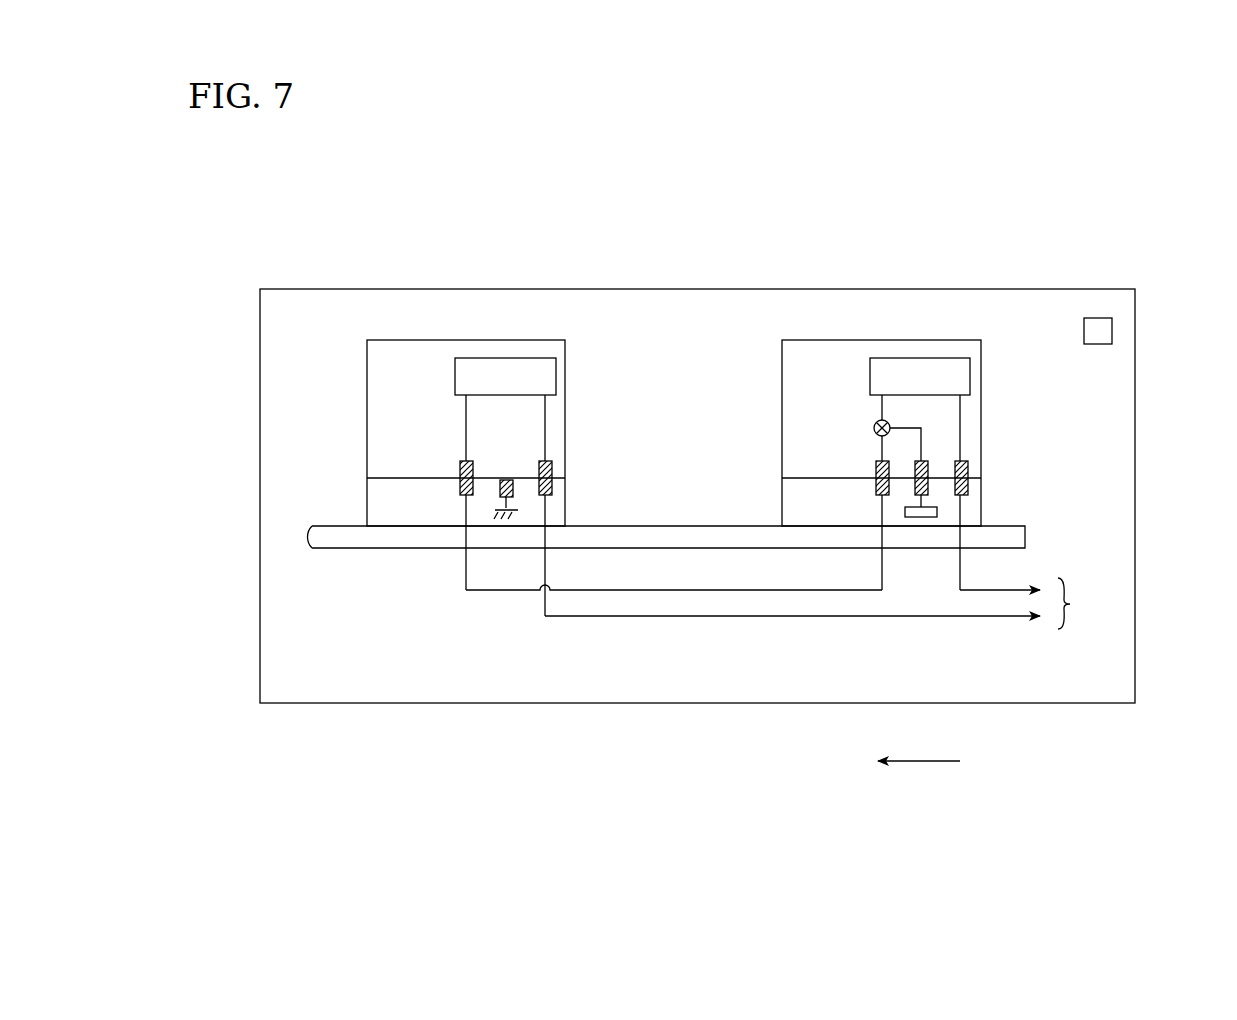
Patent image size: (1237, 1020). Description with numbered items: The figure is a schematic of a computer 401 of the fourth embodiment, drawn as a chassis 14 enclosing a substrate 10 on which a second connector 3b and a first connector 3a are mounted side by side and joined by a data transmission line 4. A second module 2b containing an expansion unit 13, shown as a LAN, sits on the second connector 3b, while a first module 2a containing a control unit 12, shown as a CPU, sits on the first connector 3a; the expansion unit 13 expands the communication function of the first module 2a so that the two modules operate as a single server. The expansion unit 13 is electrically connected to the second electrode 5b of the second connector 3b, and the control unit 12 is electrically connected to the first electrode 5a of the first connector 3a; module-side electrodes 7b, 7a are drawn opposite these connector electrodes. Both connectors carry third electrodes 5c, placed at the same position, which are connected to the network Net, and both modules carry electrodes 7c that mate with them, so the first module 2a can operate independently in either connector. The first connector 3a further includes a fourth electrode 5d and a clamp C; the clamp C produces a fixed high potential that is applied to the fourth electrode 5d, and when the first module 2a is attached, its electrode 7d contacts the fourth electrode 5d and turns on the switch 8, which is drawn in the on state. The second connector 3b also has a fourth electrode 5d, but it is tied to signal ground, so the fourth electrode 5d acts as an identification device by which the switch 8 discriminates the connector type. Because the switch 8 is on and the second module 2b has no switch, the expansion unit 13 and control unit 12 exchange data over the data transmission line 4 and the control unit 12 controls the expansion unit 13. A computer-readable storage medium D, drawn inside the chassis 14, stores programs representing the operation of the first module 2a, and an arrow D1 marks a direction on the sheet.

The computer 401 is at (760, 200).
The chassis 14 is at (1137, 307).
The second module 2b is at (393, 352).
The first module 2a is at (805, 352).
The expansion unit 13 is at (508, 357).
The control unit 12 is at (922, 357).
The connector 7b is at (460, 470).
The second electrode 5b is at (460, 486).
The fourth electrode 5d is at (512, 494).
The electrode 7c is at (553, 468).
The third electrode 5c is at (553, 489).
The substrate 10 is at (655, 526).
The second connector 3b is at (427, 515).
The first connector 3a is at (970, 514).
The data transmission line 4 is at (500, 592).
The switch 8 is at (875, 422).
The connector 7a is at (876, 470).
The first electrode 5a is at (876, 486).
The electrode 7d is at (926, 470).
The clamp C is at (920, 520).
The computer-readable storage medium D is at (1098, 344).
The direction D1 is at (918, 762).
The network Net is at (829, 603).